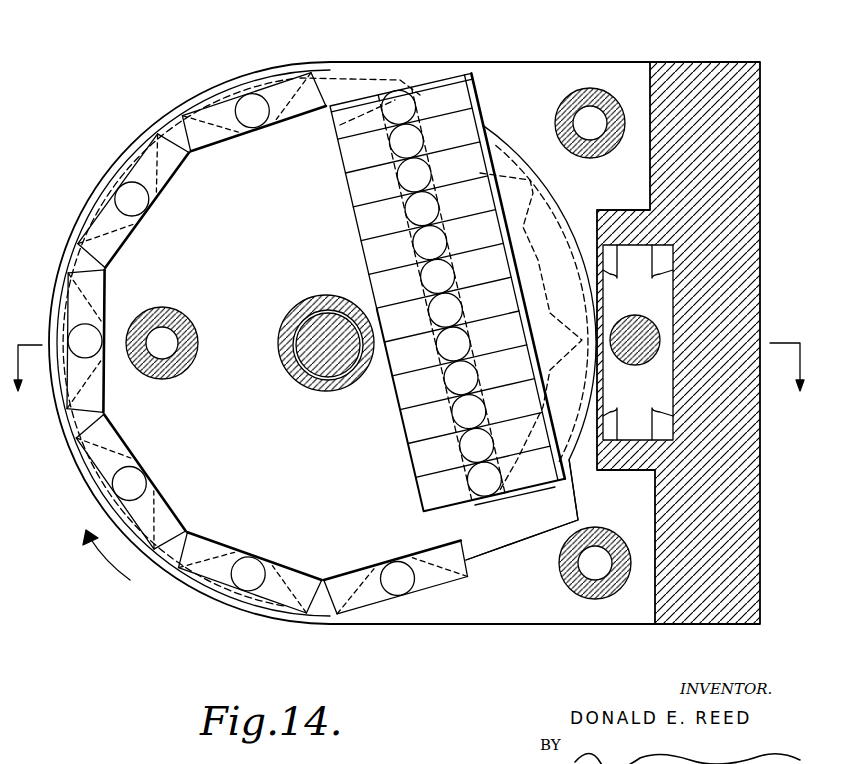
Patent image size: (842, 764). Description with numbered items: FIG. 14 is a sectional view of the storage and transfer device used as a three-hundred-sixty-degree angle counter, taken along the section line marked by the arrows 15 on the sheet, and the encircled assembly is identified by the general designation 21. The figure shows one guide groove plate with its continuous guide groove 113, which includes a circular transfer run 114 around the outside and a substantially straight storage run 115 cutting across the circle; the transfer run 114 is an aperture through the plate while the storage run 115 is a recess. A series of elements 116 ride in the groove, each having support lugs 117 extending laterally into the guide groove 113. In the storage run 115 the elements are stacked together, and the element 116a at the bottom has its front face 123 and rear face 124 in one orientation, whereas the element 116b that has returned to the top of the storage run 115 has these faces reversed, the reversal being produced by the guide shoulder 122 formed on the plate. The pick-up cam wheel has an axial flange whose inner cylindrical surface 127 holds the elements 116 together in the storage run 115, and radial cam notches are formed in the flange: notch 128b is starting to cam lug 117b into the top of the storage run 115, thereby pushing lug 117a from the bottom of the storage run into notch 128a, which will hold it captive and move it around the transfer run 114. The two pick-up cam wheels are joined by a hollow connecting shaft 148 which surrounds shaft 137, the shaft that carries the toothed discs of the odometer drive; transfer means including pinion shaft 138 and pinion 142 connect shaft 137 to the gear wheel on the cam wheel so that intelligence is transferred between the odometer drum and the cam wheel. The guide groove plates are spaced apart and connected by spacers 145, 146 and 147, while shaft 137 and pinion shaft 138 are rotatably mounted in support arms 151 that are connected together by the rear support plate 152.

The continuous guide groove 113 is at (347, 85).
The circular transfer run 114 is at (327, 93).
The straight storage run 115 is at (400, 230).
The element 116 is at (473, 123).
The bottom element 116a is at (430, 492).
The element 116b is at (390, 100).
The support lug 117 is at (142, 483).
The lug 117a is at (467, 512).
The lug 117b is at (393, 115).
The guide shoulder 122 is at (82, 242).
The front face 123 is at (363, 97).
The rear face 124 is at (352, 196).
The inner cylindrical surface 127 is at (107, 413).
The radial cam notch 128a is at (518, 505).
The radial cam notch 128b is at (420, 78).
The shaft 137 is at (300, 385).
The pinion shaft 138 is at (650, 363).
The pinion 142 is at (655, 288).
The spacer 145 is at (598, 92).
The spacer 146 is at (592, 600).
The spacer 147 is at (190, 323).
The hollow connecting shaft 148 is at (290, 356).
The support arm 151 is at (550, 80).
The rear support plate 152 is at (718, 66).
The bearing assembly 21 is at (36, 322).
The section line 15 is at (406, 383).